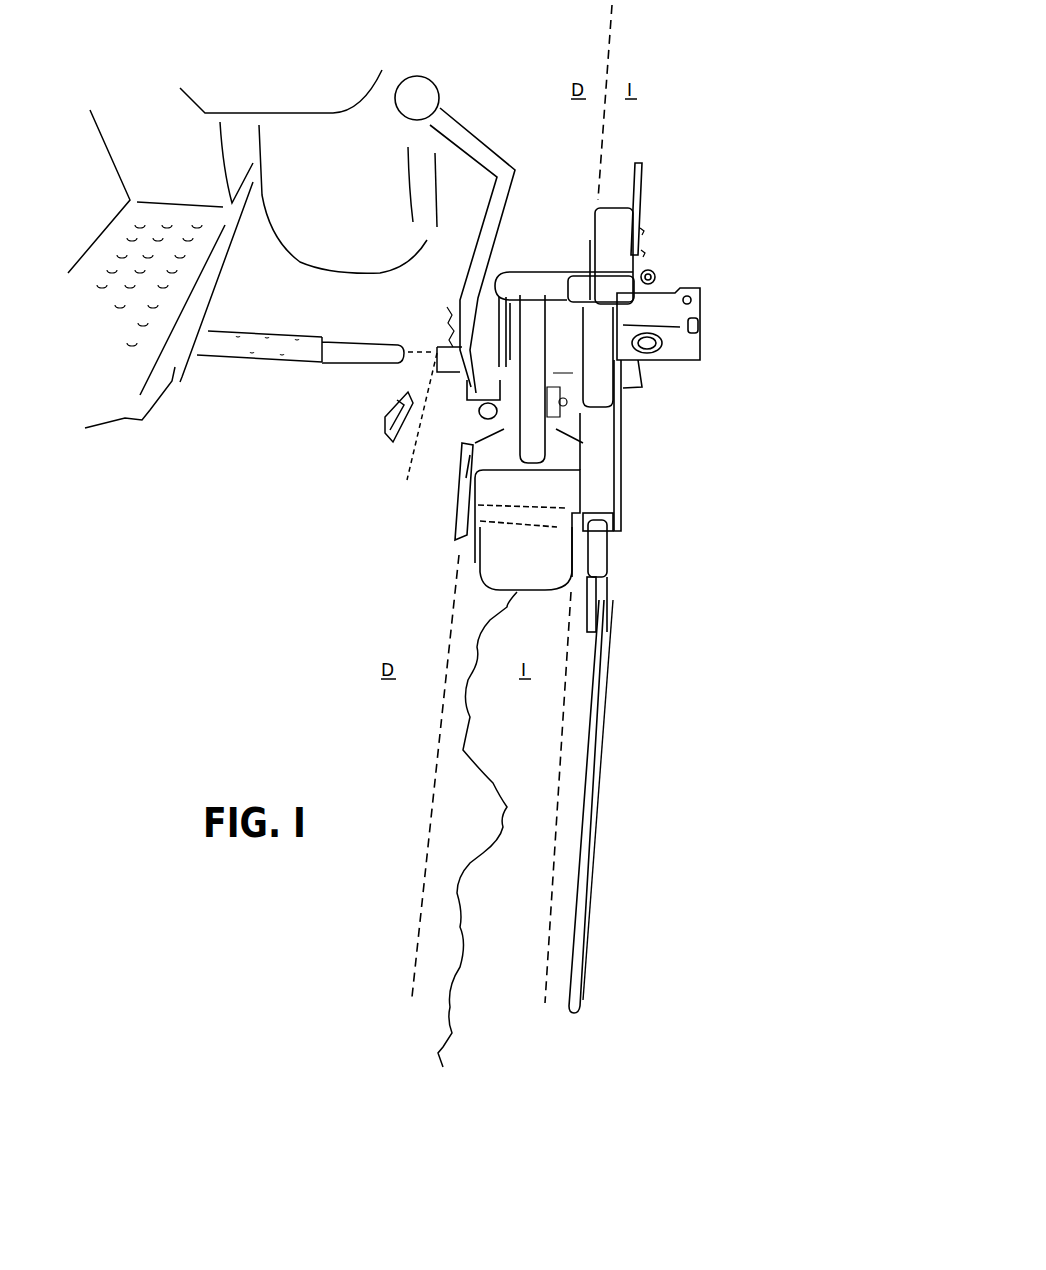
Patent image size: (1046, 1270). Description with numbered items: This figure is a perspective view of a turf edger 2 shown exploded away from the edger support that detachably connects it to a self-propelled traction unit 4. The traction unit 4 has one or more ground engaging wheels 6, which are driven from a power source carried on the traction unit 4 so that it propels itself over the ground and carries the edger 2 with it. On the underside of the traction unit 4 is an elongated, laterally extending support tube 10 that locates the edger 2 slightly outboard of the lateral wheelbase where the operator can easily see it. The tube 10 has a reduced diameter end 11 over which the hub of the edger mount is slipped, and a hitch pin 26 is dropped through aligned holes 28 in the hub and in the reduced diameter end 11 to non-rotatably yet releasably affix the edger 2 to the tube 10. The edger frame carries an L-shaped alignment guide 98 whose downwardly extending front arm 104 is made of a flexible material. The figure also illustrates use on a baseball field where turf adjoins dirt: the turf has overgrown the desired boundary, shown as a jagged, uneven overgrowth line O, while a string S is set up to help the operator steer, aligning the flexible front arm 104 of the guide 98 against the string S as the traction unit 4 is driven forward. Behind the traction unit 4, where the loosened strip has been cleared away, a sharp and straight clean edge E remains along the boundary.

The turf edger 2 is at (689, 274).
The traction unit 4 is at (92, 226).
The ground engaging wheels 6 is at (318, 160).
The support tube 10 is at (298, 362).
The reduced diameter end 11 is at (355, 353).
The hitch pin 26 is at (385, 435).
The aligned holes 28 is at (338, 345).
The alignment guide 98 is at (628, 538).
The front arm 104 is at (606, 582).
The clean edge E is at (612, 30).
The string S is at (602, 714).
The overgrowth line O is at (494, 811).